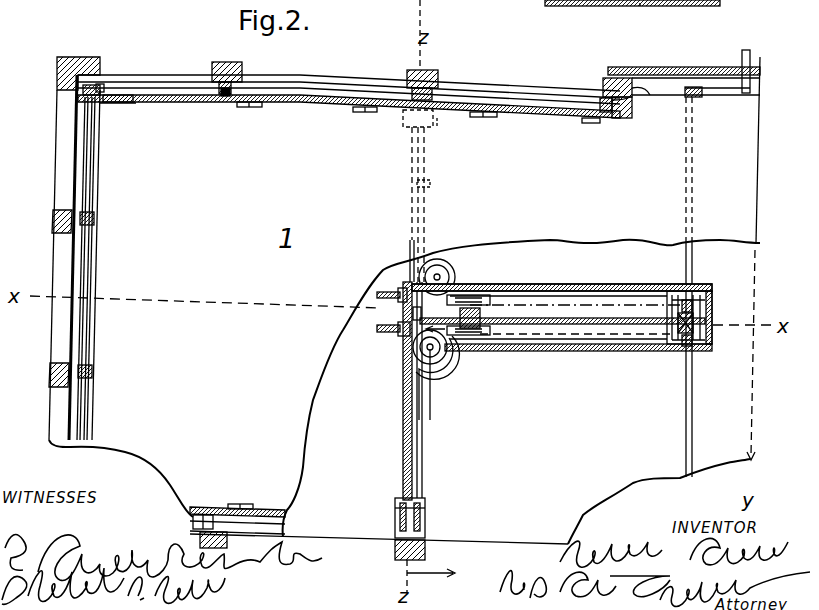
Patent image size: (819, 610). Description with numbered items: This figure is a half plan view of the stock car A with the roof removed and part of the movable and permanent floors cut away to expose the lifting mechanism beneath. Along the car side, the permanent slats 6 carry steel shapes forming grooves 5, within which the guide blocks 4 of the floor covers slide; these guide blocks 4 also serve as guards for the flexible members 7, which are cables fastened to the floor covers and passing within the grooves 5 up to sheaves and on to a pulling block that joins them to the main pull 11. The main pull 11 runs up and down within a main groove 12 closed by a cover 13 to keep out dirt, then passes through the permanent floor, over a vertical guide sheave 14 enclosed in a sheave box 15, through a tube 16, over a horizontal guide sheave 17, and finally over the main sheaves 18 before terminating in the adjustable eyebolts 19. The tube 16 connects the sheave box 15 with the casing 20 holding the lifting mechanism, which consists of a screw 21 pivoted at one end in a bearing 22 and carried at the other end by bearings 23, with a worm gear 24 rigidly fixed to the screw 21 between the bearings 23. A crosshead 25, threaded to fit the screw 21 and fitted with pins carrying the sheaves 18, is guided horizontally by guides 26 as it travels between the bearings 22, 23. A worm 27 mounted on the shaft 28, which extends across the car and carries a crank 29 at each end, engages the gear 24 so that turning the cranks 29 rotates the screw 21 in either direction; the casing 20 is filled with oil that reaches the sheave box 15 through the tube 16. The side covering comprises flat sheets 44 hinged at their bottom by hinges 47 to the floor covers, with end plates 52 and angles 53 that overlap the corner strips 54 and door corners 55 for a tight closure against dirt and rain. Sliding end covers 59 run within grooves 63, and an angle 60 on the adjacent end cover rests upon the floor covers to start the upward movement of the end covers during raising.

The stock car body A is at (70, 63).
The guide blocks 4 is at (228, 97).
The grooves 5 is at (243, 73).
The slats 6 is at (303, 87).
The flexible members 7 is at (600, 100).
The main pull 11 is at (443, 90).
The main grooves 12 is at (438, 70).
The covers 13 is at (417, 100).
The vertical guide sheaves 14 is at (422, 510).
The sheave boxes 15 is at (437, 125).
The tubes 16 is at (403, 455).
The horizontal guide sheaves 17 is at (403, 423).
The main sheaves 18 is at (500, 285).
The adjustable eyebolts 19 is at (377, 315).
The casing 20 is at (547, 4).
The screw 21 is at (588, 323).
The bearing 22 is at (402, 325).
The bearings 23 is at (670, 363).
The worm gear 24 is at (697, 305).
The crosshead 25 is at (563, 302).
The guides 26 is at (640, 4).
The worm 27 is at (694, 333).
The shaft 28 is at (690, 217).
The crank 29 is at (710, 4).
The flat sheets 44 is at (340, 102).
The hinges 47 is at (248, 108).
The plates 52 is at (106, 101).
The angles 53 is at (630, 98).
The corner strips 54 is at (100, 88).
The door corners 55 is at (637, 88).
The sliding end covers 59 is at (84, 258).
The angle 60 is at (96, 345).
The grooves 63 is at (84, 93).